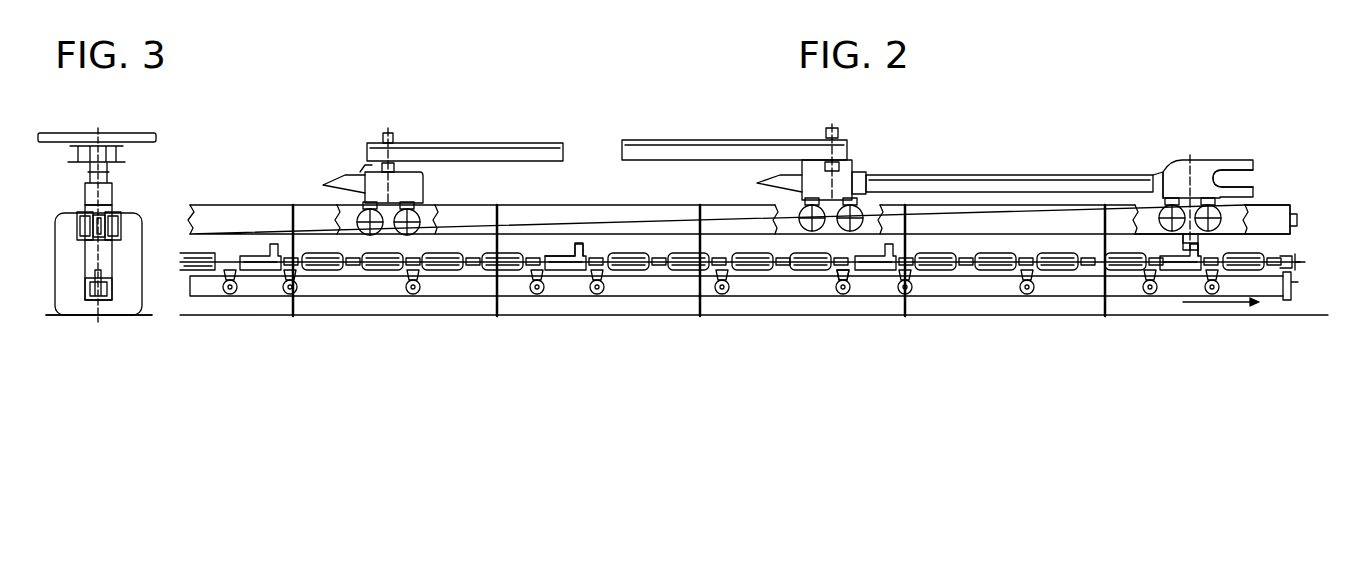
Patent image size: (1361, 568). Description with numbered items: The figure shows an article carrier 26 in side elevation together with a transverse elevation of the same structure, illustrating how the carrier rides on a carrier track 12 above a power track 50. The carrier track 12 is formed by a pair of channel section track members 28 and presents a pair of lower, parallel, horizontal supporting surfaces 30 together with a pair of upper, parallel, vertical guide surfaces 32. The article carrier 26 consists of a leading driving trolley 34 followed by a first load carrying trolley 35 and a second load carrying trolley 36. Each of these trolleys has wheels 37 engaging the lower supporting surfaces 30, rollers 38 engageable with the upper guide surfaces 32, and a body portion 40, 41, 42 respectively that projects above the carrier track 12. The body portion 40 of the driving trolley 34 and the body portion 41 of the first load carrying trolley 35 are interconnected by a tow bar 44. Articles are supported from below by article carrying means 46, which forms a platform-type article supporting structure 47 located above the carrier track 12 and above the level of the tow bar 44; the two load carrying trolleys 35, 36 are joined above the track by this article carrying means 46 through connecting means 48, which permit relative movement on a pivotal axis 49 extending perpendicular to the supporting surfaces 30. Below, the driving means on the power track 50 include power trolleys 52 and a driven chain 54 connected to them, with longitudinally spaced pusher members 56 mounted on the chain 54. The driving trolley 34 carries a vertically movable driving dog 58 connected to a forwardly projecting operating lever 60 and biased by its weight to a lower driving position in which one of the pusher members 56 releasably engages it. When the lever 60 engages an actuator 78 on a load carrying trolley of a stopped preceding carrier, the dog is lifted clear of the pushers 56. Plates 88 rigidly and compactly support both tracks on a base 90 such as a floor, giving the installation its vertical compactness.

In FIG. 2, the carrier track 12 is at (287, 204).
In FIG. 2, the article carrier 26 is at (651, 137).
In FIG. 3, the channel section track members 28 is at (78, 226).
In FIG. 2, the lower supporting surfaces 30 is at (422, 235).
In FIG. 3, the upper guide surfaces 32 is at (86, 214).
In FIG. 2, the driving trolley 34 is at (1214, 150).
In FIG. 2, the first load carrying trolley 35 is at (858, 172).
In FIG. 2, the second load carrying trolley 36 is at (360, 166).
In FIG. 2, the wheels 37 is at (1250, 206).
In FIG. 2, the rollers 38 is at (362, 203).
In FIG. 2, the body portion 40 is at (1178, 166).
In FIG. 2, the body portion 41 is at (815, 172).
In FIG. 2, the body portion 42 is at (418, 185).
In FIG. 2, the tow bar 44 is at (1065, 175).
In FIG. 2, the article carrying means 46 is at (517, 139).
In FIG. 3, the article supporting structure 47 is at (125, 131).
In FIG. 2, the connecting means 48 is at (394, 136).
In FIG. 2, the pivotal axis 49 is at (367, 150).
In FIG. 3, the power track 50 is at (113, 288).
In FIG. 2, the power track 50 is at (632, 297).
In FIG. 2, the power trolleys 52 is at (1033, 283).
In FIG. 2, the driven chain 54 is at (808, 273).
In FIG. 2, the pusher members 56 is at (583, 250).
In FIG. 2, the driving dog 58 is at (1255, 234).
In FIG. 2, the operating lever 60 is at (1255, 180).
In FIG. 2, the actuator 78 is at (336, 179).
In FIG. 3, the plates 88 is at (56, 268).
In FIG. 2, the plates 88 is at (480, 316).
In FIG. 3, the base 90 is at (52, 315).
In FIG. 2, the base 90 is at (940, 308).